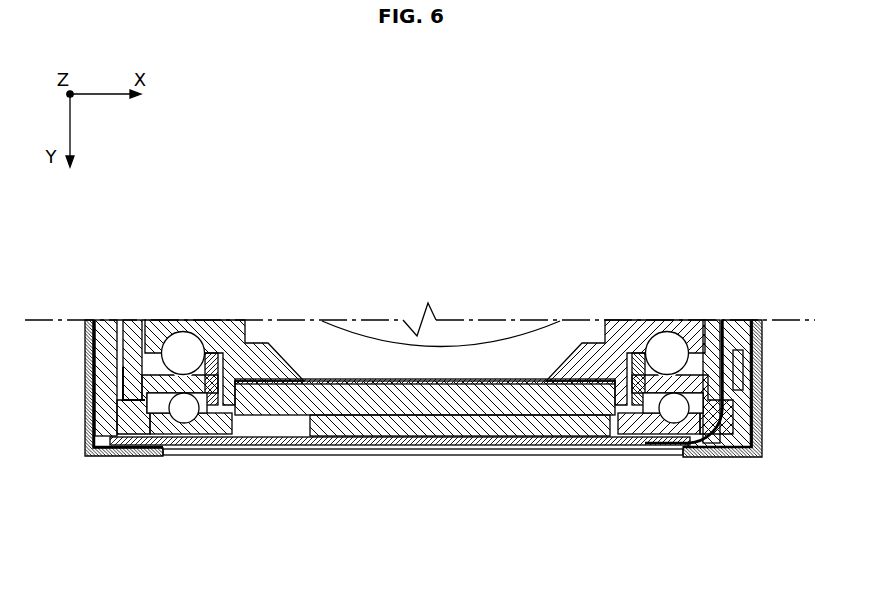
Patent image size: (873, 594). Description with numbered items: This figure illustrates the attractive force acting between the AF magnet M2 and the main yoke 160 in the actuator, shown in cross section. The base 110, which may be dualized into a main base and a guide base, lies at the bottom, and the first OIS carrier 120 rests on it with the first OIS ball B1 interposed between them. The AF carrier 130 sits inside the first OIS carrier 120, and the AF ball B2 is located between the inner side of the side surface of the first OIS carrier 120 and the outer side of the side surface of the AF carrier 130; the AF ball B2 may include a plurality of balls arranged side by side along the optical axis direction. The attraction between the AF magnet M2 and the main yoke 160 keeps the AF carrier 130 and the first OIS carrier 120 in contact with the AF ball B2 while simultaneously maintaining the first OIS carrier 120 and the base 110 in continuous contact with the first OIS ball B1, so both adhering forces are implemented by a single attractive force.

The first OIS carrier 120 is at (213, 378).
The AF carrier 130 is at (208, 323).
The AF ball B2 is at (170, 343).
The first OIS ball B1 is at (185, 414).
The AF magnet M2 is at (487, 400).
The base 110 is at (227, 441).
The main yoke 160 is at (428, 456).